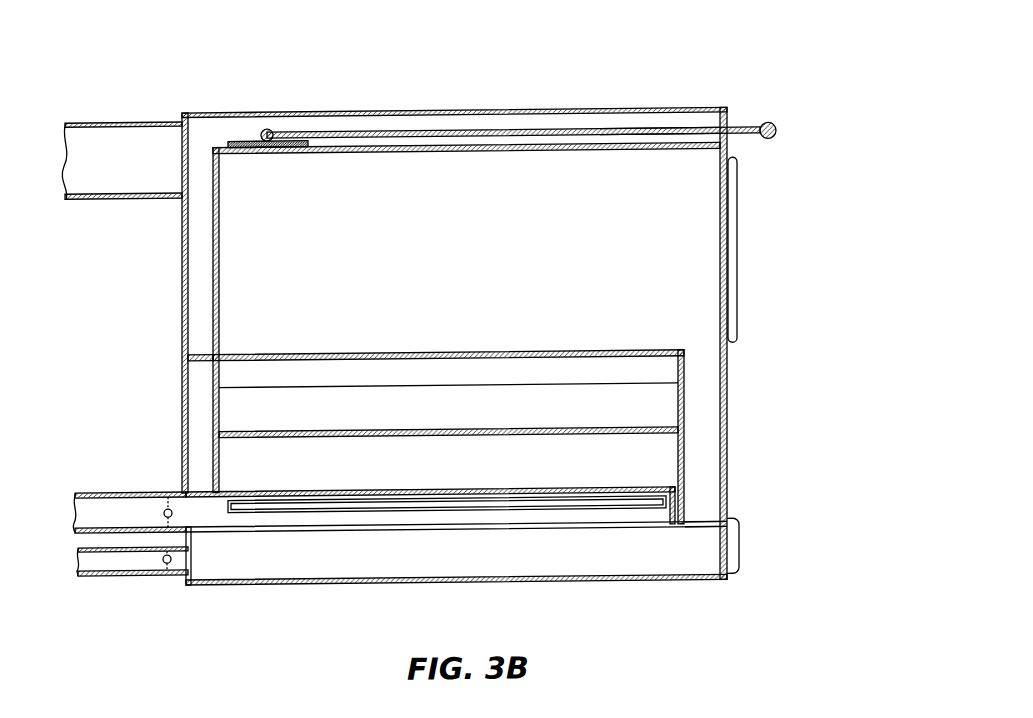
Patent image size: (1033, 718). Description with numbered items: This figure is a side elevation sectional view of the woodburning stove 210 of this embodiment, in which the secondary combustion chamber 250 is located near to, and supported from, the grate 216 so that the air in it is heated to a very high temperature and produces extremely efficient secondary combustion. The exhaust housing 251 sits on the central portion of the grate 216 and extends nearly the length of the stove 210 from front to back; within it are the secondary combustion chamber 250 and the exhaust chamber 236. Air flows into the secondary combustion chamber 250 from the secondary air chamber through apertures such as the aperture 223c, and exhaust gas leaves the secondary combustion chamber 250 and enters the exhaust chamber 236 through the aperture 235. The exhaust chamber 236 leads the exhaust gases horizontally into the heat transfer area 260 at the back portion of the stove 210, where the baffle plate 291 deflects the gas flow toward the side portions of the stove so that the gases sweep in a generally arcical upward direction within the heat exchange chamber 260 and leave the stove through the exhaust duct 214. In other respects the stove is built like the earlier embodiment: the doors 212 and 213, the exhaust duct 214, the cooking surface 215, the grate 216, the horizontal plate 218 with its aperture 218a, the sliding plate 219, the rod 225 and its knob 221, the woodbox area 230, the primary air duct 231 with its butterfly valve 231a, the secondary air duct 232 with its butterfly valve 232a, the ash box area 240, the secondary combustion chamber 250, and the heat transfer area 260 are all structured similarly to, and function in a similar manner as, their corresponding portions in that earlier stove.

The stove 210 is at (755, 71).
The door 212 is at (738, 239).
The door 213 is at (740, 551).
The exhaust duct 214 is at (141, 168).
The cooking surface 215 is at (382, 112).
The grate 216 is at (697, 525).
The horizontal plate 218 is at (497, 155).
The aperture 218a is at (270, 151).
The sliding plate 219 is at (262, 142).
The knob 221 is at (776, 133).
The aperture 223c is at (545, 510).
The rod 225 is at (645, 133).
The woodbox area 230 is at (521, 244).
The primary air duct 231 is at (100, 557).
The butterfly valve 231a is at (165, 563).
The secondary air duct 232 is at (105, 512).
The butterfly valve 232a is at (165, 504).
The aperture 235 is at (532, 431).
The exhaust chamber 236 is at (441, 423).
The ash box area 240 is at (452, 568).
The secondary combustion chamber 250 is at (448, 479).
The exhaust housing 251 is at (452, 355).
The heat transfer area 260 is at (513, 125).
The baffle plate 291 is at (198, 355).